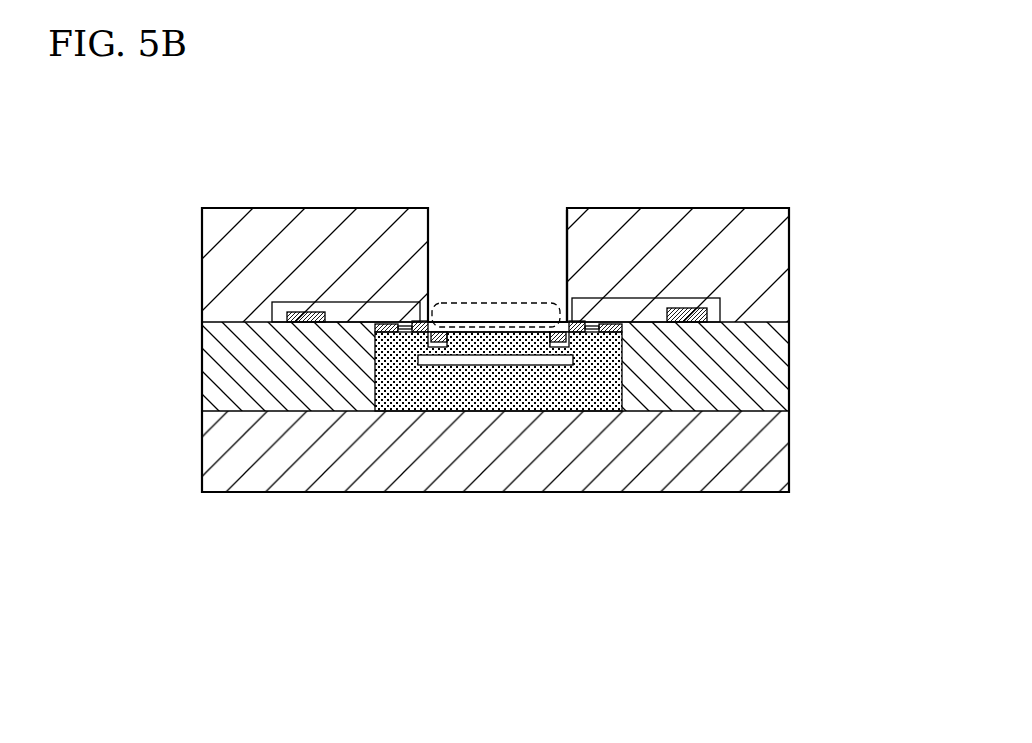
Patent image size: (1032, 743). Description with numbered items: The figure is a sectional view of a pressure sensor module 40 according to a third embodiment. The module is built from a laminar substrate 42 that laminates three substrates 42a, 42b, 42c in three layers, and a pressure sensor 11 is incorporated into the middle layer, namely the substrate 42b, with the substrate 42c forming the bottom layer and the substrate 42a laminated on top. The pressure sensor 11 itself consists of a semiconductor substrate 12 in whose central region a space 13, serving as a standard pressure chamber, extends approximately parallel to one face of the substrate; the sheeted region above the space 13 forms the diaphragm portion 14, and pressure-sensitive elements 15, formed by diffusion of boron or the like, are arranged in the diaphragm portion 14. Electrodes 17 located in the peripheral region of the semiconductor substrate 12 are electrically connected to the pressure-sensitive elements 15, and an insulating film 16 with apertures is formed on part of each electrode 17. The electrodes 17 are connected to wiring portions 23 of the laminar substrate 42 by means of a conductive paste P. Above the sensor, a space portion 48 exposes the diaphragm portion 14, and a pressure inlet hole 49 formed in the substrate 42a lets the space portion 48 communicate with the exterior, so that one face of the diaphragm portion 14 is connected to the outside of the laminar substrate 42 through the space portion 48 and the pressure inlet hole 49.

The pressure sensor module 40 is at (782, 173).
The laminar substrate 42 is at (870, 253).
The substrate 42a is at (772, 271).
The substrate 42b is at (772, 373).
The substrate 42c is at (772, 446).
The pressure inlet hole 49 is at (566, 230).
The space portion 48 is at (497, 318).
The conductive paste P is at (352, 308).
The wiring portions 23 is at (306, 317).
The pressure sensor 11 is at (495, 469).
The semiconductor substrate 12 is at (460, 390).
The space 13 is at (487, 360).
The diaphragm portion 14 is at (517, 343).
The pressure-sensitive elements 15 is at (437, 343).
The insulating film 16 is at (375, 328).
The electrodes 17 is at (403, 328).